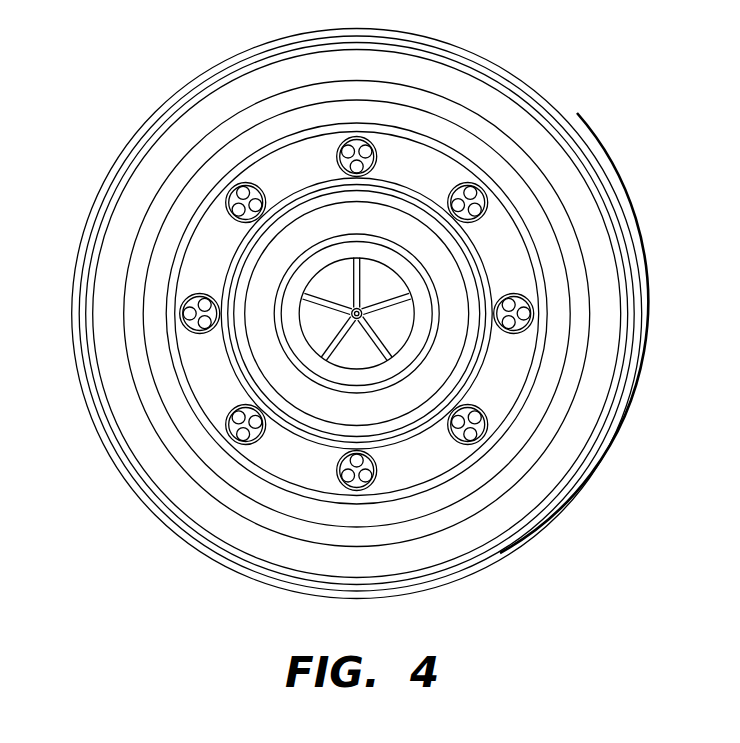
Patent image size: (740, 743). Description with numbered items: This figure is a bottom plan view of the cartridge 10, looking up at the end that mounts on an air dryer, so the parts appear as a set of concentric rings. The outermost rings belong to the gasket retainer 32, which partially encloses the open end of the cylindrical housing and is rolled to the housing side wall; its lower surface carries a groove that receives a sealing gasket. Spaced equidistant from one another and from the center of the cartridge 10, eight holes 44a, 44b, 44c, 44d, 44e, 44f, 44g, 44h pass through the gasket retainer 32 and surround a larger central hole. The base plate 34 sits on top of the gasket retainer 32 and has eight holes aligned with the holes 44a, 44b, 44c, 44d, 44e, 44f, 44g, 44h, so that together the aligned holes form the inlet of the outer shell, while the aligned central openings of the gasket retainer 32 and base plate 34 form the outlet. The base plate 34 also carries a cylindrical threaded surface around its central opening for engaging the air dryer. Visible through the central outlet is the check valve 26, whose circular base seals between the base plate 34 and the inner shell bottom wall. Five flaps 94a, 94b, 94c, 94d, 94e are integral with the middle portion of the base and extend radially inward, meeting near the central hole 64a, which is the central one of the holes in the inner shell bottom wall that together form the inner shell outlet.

The cartridge 10 is at (111, 106).
The check valve 26 is at (444, 203).
The gasket retainer 32 is at (120, 233).
The base plate 34 is at (457, 287).
The hole 44a is at (198, 334).
The hole 44b is at (248, 219).
The hole 44c is at (337, 157).
The hole 44d is at (478, 225).
The hole 44e is at (513, 334).
The hole 44f is at (453, 443).
The hole 44g is at (337, 467).
The hole 44h is at (232, 408).
The central hole 64a is at (362, 319).
The flap 94a is at (334, 336).
The flap 94b is at (350, 291).
The flap 94c is at (394, 291).
The flap 94d is at (400, 333).
The flap 94e is at (372, 361).